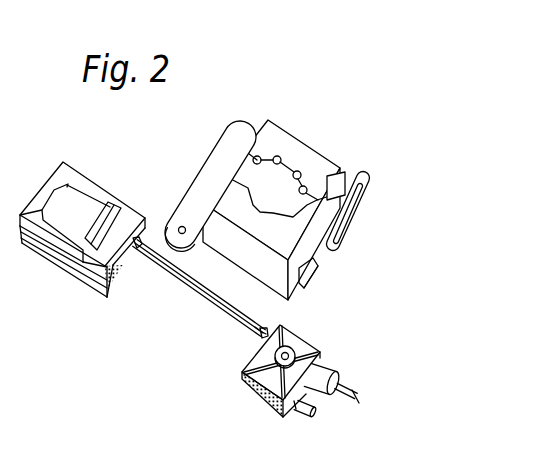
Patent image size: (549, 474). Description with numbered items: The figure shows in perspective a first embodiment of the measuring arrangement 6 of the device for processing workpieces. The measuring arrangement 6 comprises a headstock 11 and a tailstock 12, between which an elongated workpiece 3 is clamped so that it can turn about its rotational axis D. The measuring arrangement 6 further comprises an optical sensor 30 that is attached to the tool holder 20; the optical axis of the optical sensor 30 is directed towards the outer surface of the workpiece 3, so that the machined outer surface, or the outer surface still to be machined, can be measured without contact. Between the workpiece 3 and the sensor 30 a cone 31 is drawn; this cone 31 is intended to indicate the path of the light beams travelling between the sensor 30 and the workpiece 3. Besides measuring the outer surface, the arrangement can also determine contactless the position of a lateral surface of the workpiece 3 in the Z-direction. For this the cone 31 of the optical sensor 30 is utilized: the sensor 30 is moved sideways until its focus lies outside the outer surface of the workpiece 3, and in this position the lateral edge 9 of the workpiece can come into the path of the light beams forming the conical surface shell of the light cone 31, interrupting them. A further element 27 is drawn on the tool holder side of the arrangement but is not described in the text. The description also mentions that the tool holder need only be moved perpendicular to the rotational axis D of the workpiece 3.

The measuring arrangement 6 is at (290, 67).
The headstock 11 is at (60, 277).
The lateral edge 9 is at (266, 326).
The workpiece 3 is at (242, 335).
The rotational axis D is at (264, 334).
The tool holder 20 is at (320, 147).
The mounting bracket 27 is at (370, 188).
The optical sensor 30 is at (210, 197).
The cone 31 is at (178, 256).
The tailstock 12 is at (318, 340).